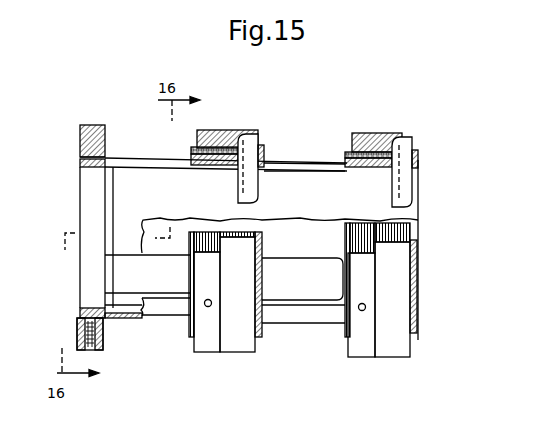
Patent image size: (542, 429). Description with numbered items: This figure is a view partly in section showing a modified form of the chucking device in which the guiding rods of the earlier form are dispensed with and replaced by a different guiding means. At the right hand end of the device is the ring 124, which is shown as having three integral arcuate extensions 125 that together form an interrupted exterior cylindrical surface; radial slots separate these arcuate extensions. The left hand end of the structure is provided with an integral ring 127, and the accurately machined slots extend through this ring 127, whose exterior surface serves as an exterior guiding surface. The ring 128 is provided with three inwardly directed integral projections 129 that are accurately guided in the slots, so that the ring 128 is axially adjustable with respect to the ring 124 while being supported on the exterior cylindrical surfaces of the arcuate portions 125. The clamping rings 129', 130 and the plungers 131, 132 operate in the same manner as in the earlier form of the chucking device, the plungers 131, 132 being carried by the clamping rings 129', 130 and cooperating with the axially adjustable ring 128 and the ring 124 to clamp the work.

The ring 124 is at (357, 173).
The arcuate extensions 125 is at (132, 170).
The integral ring 127 is at (79, 314).
The ring 128 is at (265, 149).
The inwardly directed integral projections 129 is at (210, 173).
The clamping ring 129' is at (378, 136).
The clamping ring 130 is at (233, 137).
The plunger 131 is at (411, 151).
The plunger 132 is at (253, 183).